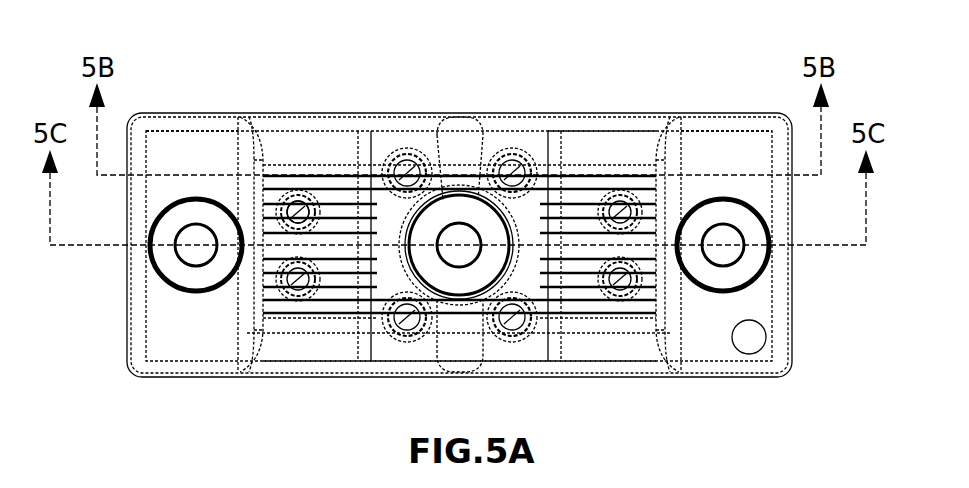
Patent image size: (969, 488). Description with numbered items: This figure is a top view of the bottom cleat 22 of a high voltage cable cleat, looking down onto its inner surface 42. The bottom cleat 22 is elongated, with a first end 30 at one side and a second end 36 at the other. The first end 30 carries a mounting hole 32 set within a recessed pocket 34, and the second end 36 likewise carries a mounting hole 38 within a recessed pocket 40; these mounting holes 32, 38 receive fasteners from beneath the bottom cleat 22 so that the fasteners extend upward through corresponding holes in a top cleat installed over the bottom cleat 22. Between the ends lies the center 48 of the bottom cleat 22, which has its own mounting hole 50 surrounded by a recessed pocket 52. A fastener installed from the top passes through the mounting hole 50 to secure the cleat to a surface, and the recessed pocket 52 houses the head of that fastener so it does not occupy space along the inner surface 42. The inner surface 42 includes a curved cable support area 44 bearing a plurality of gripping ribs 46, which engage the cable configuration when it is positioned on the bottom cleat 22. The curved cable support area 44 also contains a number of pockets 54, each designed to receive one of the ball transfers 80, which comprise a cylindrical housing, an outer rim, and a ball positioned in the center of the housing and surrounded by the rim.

The bottom cleat 22 is at (155, 365).
The first end 30 is at (170, 135).
The mounting hole 32 is at (197, 250).
The recessed pocket 34 is at (167, 262).
The second end 36 is at (717, 143).
The mounting hole 38 is at (725, 250).
The recessed pocket 40 is at (758, 252).
The inner surface 42 is at (613, 133).
The curved cable support area 44 is at (310, 337).
The gripping ribs 46 is at (602, 317).
The center 48 is at (488, 222).
The mounting hole 50 is at (459, 237).
The recessed pocket 52 is at (580, 138).
The pockets 54 is at (297, 200).
The ball transfers 80 is at (303, 203).